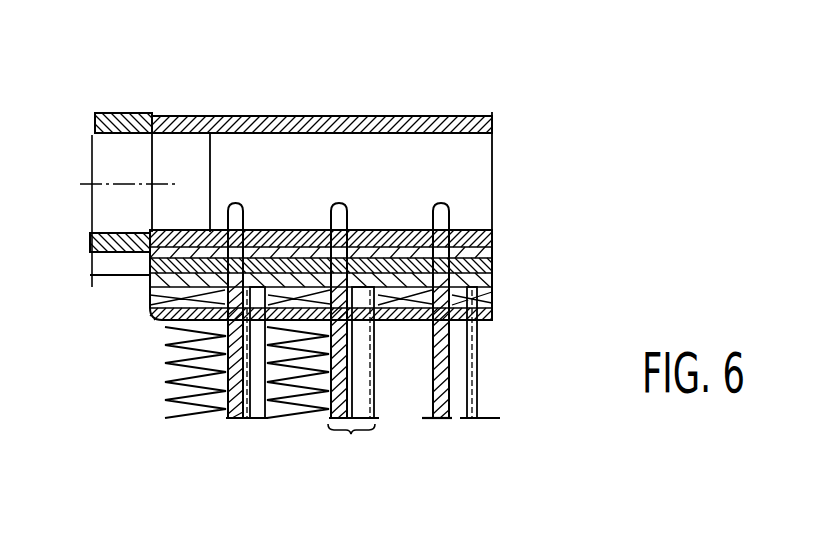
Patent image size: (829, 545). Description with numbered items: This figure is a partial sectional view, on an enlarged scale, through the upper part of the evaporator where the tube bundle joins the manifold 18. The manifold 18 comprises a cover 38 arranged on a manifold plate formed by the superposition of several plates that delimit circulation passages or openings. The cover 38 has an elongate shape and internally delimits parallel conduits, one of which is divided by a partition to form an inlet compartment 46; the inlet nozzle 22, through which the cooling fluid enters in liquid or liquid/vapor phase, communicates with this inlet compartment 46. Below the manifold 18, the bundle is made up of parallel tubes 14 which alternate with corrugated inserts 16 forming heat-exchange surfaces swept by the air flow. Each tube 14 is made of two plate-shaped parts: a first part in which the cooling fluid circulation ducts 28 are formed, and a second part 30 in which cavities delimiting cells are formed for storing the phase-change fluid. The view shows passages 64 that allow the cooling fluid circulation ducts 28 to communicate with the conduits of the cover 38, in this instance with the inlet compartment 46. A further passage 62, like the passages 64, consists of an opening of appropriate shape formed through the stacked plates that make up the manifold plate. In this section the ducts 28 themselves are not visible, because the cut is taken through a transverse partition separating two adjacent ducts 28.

The tube 14 is at (353, 339).
The corrugated insert 16 is at (303, 416).
The manifold 18 is at (366, 113).
The inlet nozzle 22 is at (121, 113).
The duct 28 is at (233, 420).
The second part 30 is at (257, 420).
The cover 38 is at (448, 116).
The inlet compartment 46 is at (470, 176).
The passage 62 is at (277, 229).
The passage 64 is at (237, 210).